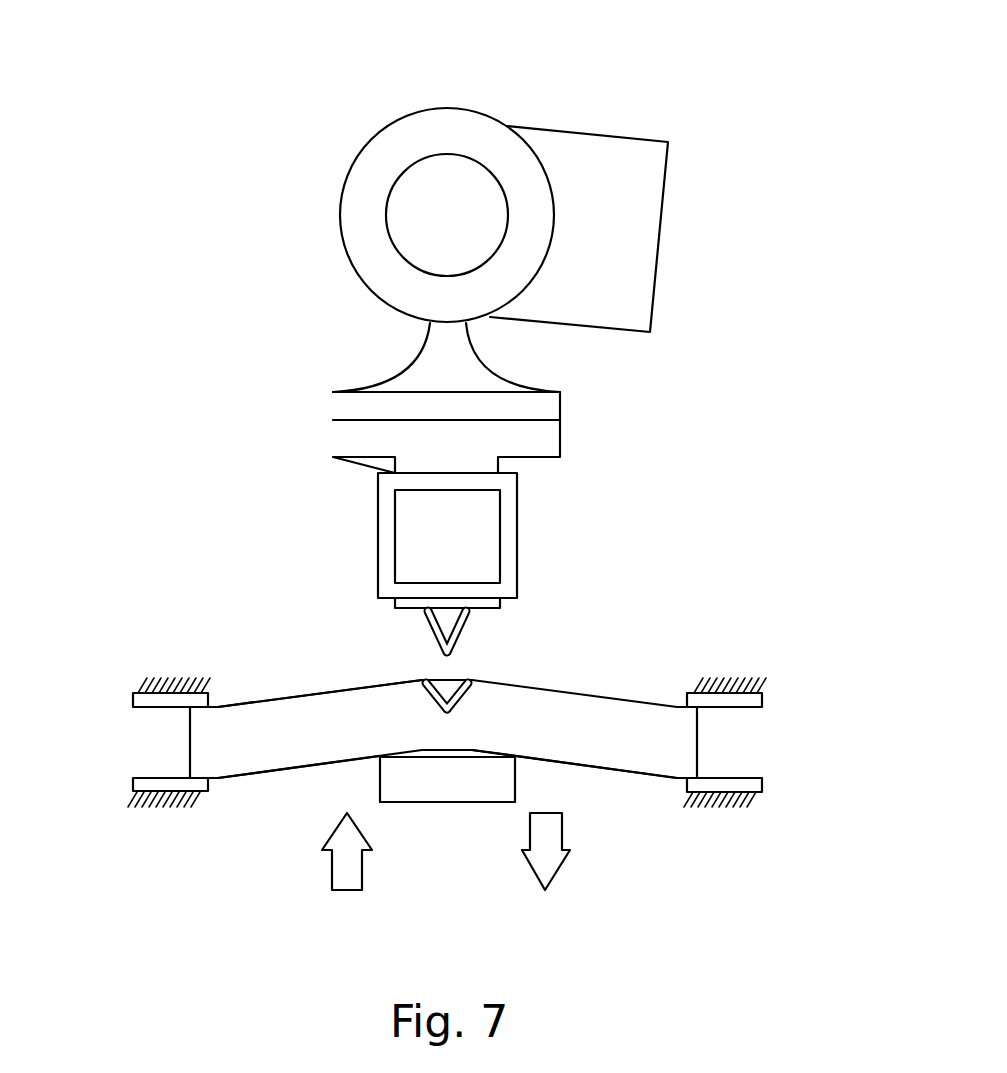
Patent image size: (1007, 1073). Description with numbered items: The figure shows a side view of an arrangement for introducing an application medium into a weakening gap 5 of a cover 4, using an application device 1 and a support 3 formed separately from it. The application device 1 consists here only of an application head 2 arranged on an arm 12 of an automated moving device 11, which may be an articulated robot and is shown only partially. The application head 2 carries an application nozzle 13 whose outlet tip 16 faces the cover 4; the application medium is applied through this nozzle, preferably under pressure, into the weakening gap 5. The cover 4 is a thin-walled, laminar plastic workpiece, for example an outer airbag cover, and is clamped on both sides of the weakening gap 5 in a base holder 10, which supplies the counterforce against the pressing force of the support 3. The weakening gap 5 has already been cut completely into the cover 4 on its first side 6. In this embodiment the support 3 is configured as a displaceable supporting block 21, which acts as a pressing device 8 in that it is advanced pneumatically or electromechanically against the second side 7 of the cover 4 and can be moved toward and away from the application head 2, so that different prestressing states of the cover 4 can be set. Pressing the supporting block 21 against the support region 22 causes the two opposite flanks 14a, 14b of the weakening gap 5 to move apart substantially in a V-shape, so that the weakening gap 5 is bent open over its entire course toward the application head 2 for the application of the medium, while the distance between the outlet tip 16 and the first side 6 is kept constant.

The application device 1 is at (440, 262).
The application head 2 is at (485, 465).
The support 3 is at (447, 835).
The cover 4 is at (443, 738).
The weakening gap 5 is at (460, 662).
The first side 6 is at (279, 690).
The second side 7 is at (588, 768).
The pressing device 8 is at (447, 835).
The base holder 10 is at (142, 783).
The automated moving device 11 is at (579, 192).
The arm 12 is at (593, 163).
The application nozzle 13 is at (379, 621).
The flank 14a is at (430, 673).
The flank 14b is at (462, 673).
The outlet tip 16 is at (445, 655).
The supporting block 21 is at (418, 802).
The support region 22 is at (366, 762).